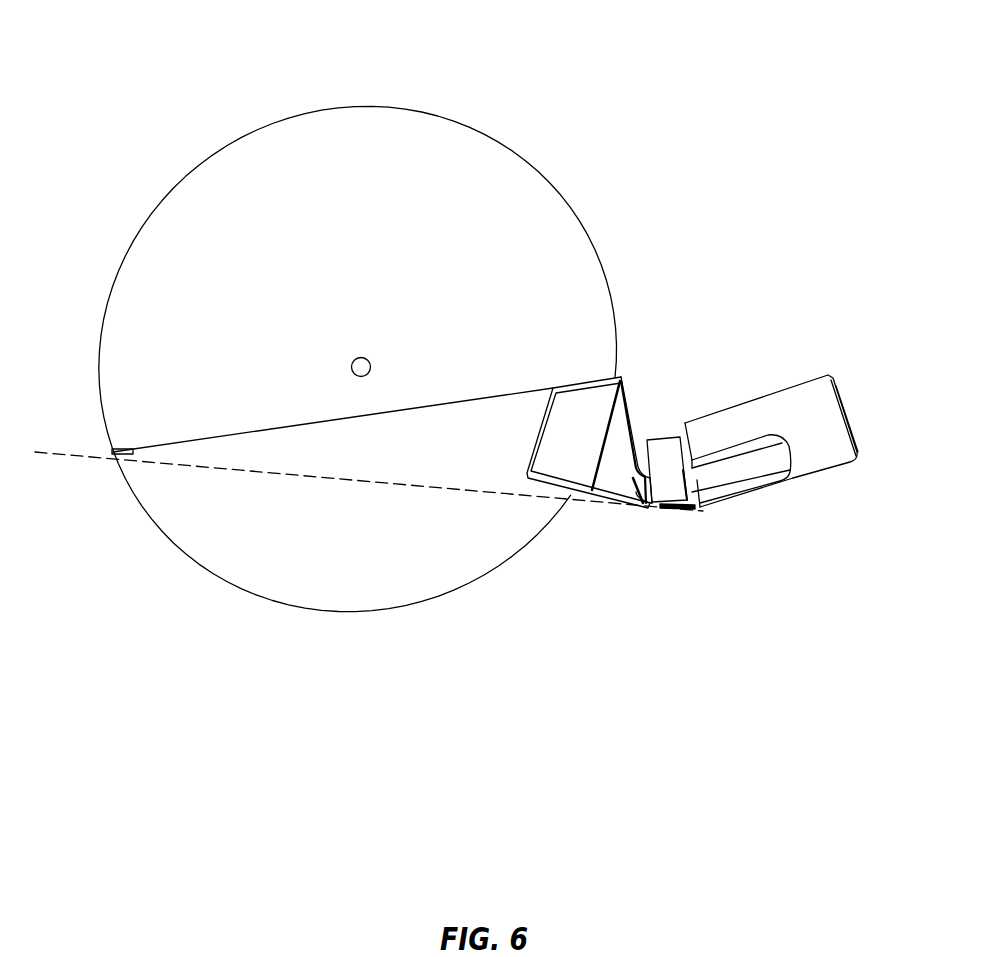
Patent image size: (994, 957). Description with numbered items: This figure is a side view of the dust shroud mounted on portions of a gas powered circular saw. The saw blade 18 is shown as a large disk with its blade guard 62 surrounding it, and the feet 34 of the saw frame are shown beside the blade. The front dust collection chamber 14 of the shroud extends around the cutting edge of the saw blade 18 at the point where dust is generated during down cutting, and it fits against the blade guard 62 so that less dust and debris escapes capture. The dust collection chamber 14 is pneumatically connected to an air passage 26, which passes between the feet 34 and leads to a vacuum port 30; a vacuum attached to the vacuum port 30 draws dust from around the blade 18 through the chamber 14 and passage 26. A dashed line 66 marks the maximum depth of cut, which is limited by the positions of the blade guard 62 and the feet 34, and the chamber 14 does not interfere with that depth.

The dust collection chamber 14 is at (570, 460).
The saw blade 18 is at (385, 568).
The air passage 26 is at (642, 490).
The vacuum port 30 is at (820, 455).
The feet 34 is at (670, 487).
The blade guard 62 is at (288, 162).
The maximum depth of cut line 66 is at (262, 486).